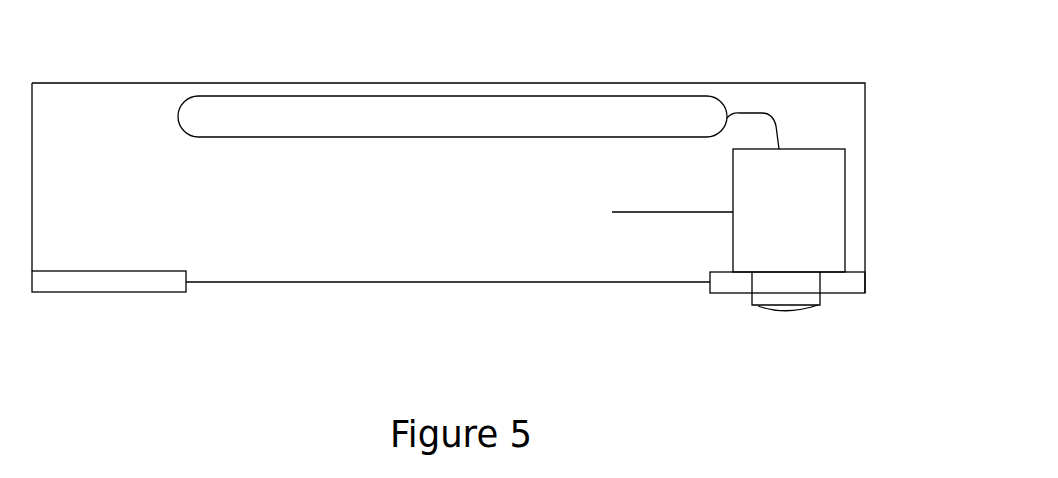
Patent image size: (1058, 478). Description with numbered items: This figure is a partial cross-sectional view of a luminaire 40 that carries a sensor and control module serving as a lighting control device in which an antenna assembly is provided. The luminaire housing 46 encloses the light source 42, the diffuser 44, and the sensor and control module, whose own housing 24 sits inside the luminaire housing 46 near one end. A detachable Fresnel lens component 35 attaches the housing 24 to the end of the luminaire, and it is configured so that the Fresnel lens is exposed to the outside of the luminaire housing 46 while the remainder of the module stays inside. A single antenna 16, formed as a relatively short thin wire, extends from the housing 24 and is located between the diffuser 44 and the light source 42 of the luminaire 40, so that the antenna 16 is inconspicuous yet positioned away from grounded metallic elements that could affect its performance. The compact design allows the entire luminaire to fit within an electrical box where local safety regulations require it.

The luminaire 40 is at (182, 53).
The light source 42 is at (440, 124).
The diffuser 44 is at (425, 283).
The luminaire housing 46 is at (868, 128).
The housing 24 is at (799, 222).
The antenna 16 is at (650, 213).
The Fresnel lens component 35 is at (822, 300).